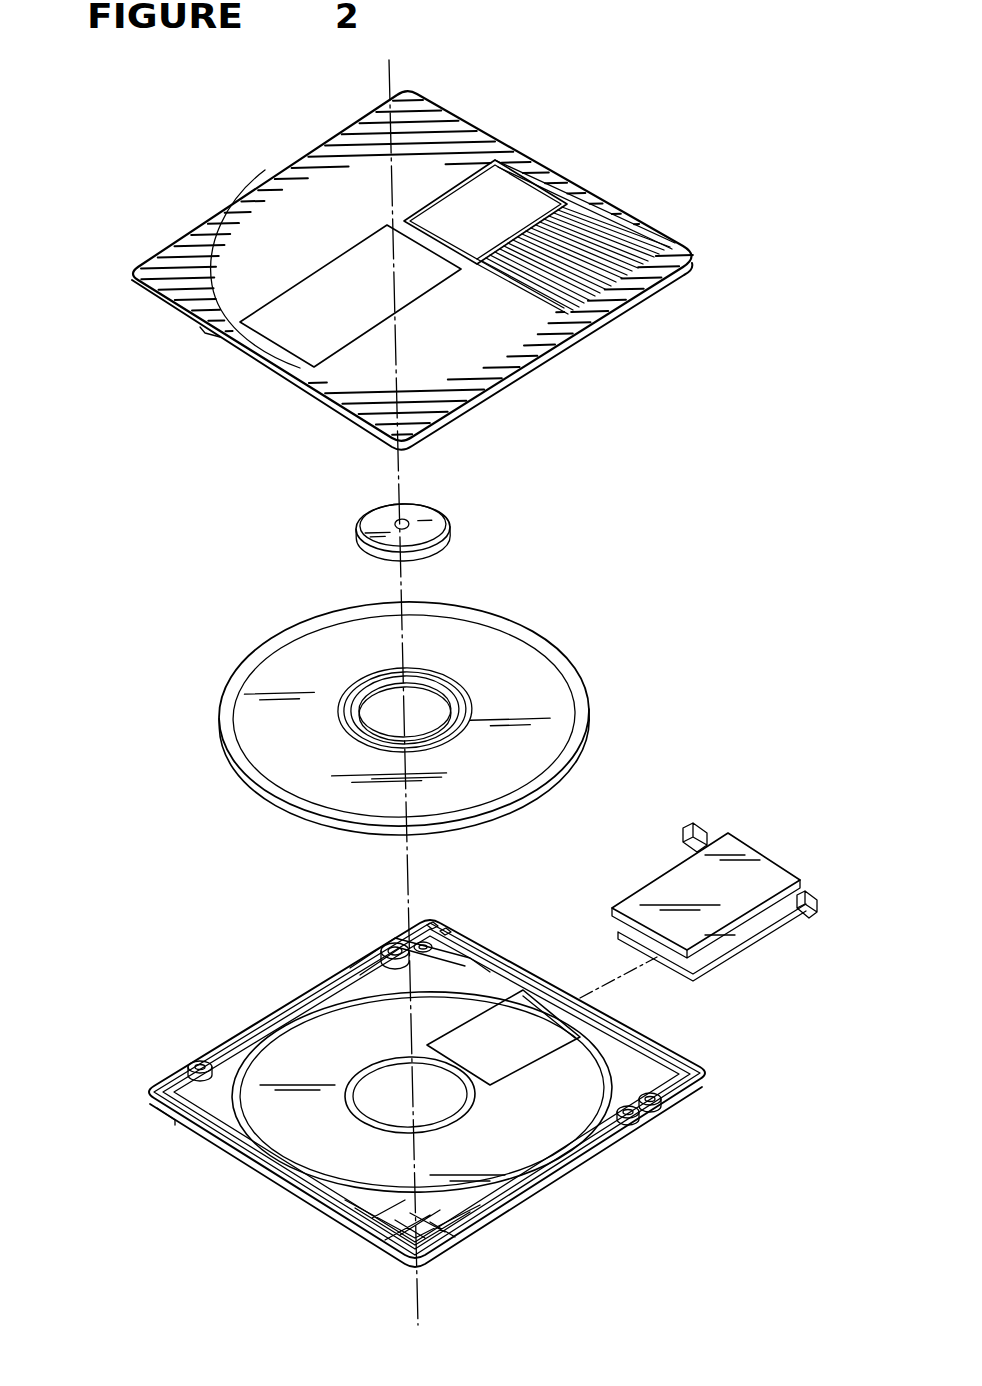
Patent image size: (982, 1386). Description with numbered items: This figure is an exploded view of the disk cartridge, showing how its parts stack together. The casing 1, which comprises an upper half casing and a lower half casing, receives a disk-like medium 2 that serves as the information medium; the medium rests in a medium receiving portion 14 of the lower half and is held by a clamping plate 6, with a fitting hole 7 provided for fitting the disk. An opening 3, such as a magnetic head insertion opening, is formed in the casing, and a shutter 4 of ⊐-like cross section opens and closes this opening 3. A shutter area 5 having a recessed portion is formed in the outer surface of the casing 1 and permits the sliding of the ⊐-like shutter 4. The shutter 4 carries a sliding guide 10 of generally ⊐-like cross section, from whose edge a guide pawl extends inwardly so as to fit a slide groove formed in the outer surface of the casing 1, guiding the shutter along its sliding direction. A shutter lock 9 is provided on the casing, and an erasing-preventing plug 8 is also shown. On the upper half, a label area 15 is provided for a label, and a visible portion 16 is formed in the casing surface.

The casing 1 is at (612, 335).
The disk-like medium 2 is at (584, 673).
The opening 3 is at (520, 220).
The shutter 4 is at (665, 890).
The shutter area 5 is at (616, 270).
The clamping plate 6 is at (427, 513).
The fitting hole 7 is at (402, 1093).
The erasing-preventing plug 8 is at (438, 1213).
The shutter lock 9 is at (470, 947).
The sliding guide 10 is at (690, 824).
The medium receiving portion 14 is at (237, 1057).
The label area 15 is at (297, 300).
The visible portion 16 is at (262, 213).